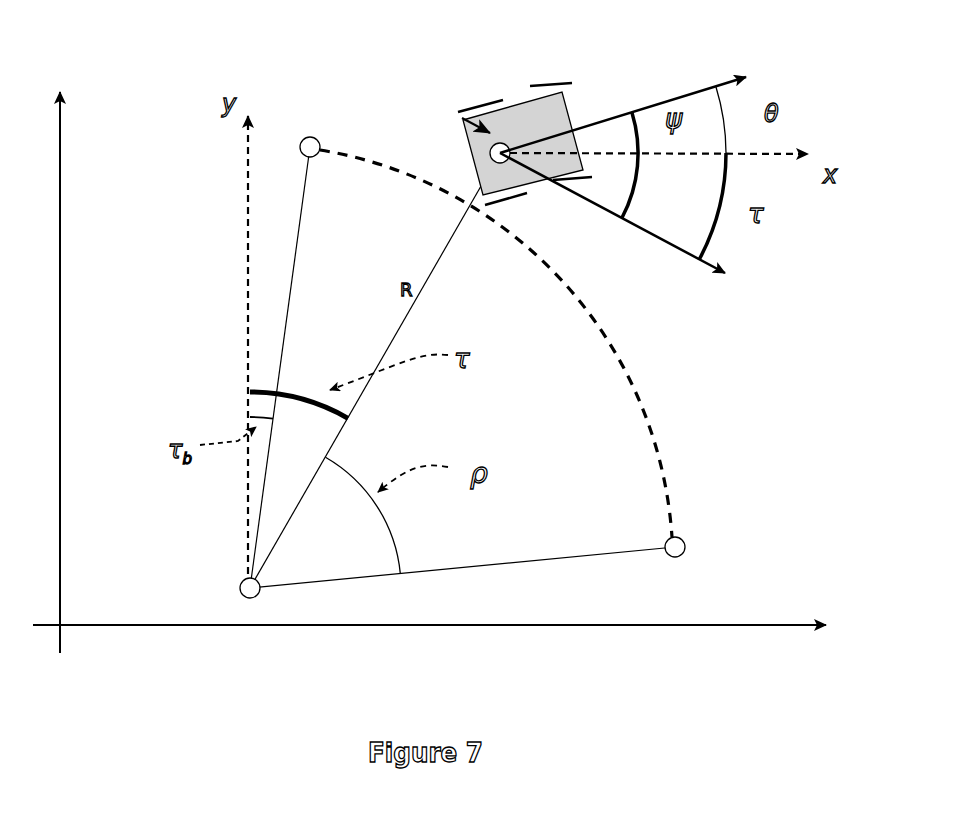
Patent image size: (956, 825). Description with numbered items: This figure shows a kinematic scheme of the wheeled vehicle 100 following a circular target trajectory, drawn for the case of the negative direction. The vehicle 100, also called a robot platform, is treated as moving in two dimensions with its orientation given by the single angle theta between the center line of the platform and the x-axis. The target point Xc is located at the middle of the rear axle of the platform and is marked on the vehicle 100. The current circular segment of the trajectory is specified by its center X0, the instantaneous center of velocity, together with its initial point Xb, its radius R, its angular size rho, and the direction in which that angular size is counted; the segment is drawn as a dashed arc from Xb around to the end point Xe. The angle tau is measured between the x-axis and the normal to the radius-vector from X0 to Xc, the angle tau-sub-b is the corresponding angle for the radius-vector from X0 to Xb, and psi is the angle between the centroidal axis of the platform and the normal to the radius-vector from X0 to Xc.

The vehicle 100 is at (515, 104).
The instantaneous center of velocity X0 is at (227, 577).
The initial point Xb is at (328, 169).
The end point Xe is at (701, 533).
The target point Xc is at (462, 118).